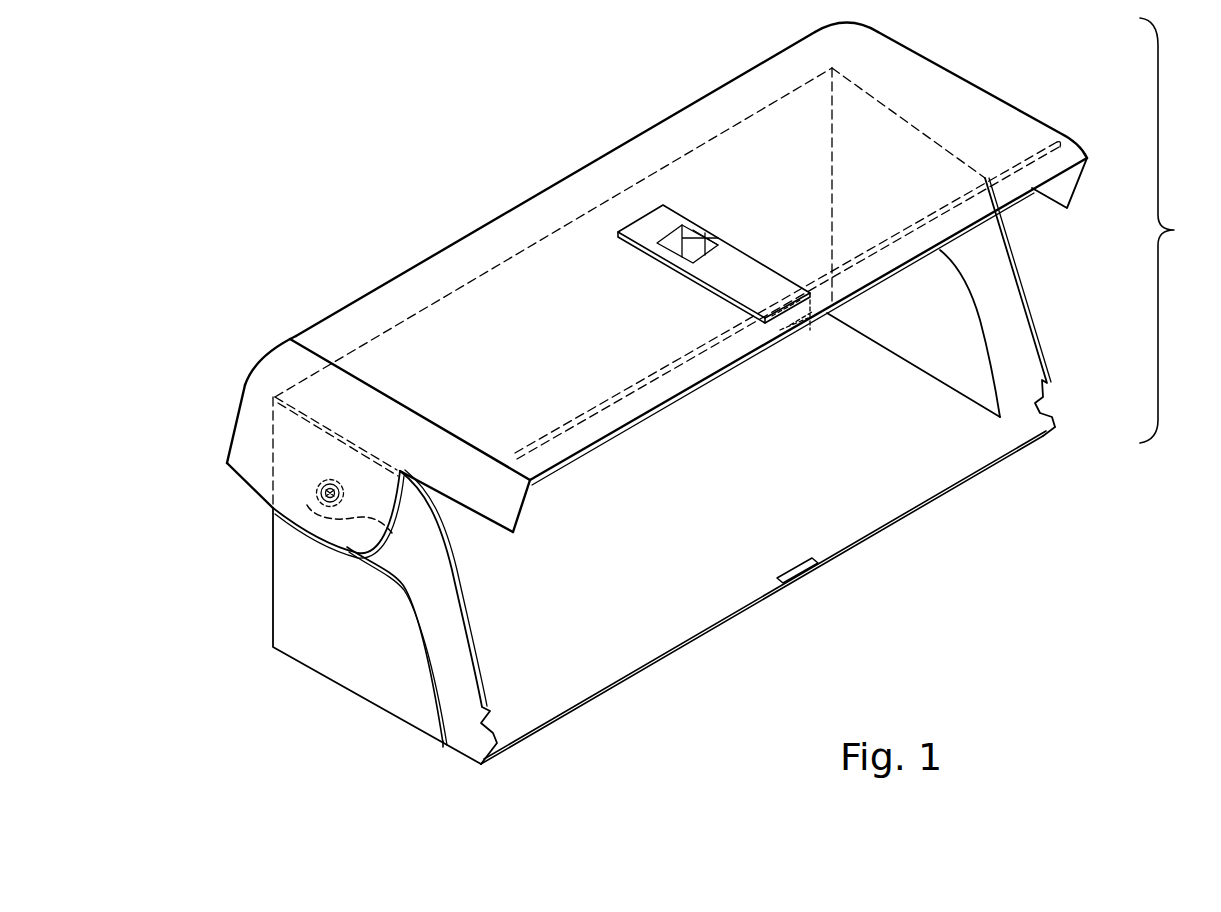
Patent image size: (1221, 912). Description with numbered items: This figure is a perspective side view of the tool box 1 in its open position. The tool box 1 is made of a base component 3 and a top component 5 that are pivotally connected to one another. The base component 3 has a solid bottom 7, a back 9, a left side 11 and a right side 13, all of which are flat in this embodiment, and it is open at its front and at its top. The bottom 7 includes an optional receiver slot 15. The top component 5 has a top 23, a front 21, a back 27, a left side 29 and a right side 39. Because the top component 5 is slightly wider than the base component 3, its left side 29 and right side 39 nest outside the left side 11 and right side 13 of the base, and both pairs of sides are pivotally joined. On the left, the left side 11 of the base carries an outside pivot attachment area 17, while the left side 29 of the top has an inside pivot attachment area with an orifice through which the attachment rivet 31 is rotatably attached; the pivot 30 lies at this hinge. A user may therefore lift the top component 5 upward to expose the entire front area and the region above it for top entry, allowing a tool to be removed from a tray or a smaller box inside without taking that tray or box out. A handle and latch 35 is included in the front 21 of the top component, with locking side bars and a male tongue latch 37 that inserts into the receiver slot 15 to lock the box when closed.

The tool box 1 is at (673, 391).
The base component 3 is at (848, 590).
The top component 5 is at (390, 223).
The solid bottom 7 is at (920, 495).
The back 9 is at (470, 523).
The left side 11 is at (370, 680).
The right side 13 is at (1008, 323).
The receiver slot 15 is at (798, 570).
The outside pivot attachment area 17 is at (363, 534).
The front 21 is at (490, 255).
The top 23 is at (230, 453).
The back 27 is at (244, 481).
The left side 29 is at (468, 465).
The pivot bracket 30 is at (308, 520).
The attachment rivet 31 is at (332, 484).
The handle and latch 35 is at (737, 268).
The male tongue latch 37 is at (770, 346).
The right side 39 is at (1070, 203).